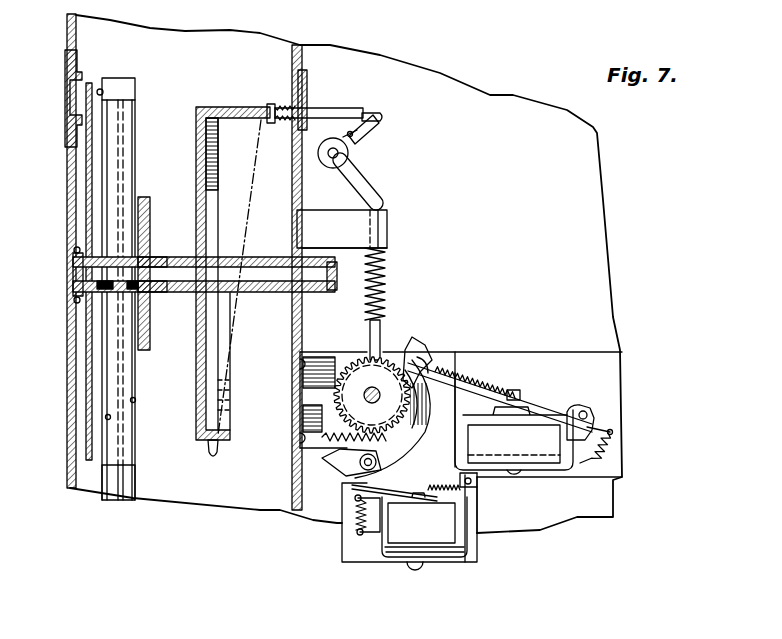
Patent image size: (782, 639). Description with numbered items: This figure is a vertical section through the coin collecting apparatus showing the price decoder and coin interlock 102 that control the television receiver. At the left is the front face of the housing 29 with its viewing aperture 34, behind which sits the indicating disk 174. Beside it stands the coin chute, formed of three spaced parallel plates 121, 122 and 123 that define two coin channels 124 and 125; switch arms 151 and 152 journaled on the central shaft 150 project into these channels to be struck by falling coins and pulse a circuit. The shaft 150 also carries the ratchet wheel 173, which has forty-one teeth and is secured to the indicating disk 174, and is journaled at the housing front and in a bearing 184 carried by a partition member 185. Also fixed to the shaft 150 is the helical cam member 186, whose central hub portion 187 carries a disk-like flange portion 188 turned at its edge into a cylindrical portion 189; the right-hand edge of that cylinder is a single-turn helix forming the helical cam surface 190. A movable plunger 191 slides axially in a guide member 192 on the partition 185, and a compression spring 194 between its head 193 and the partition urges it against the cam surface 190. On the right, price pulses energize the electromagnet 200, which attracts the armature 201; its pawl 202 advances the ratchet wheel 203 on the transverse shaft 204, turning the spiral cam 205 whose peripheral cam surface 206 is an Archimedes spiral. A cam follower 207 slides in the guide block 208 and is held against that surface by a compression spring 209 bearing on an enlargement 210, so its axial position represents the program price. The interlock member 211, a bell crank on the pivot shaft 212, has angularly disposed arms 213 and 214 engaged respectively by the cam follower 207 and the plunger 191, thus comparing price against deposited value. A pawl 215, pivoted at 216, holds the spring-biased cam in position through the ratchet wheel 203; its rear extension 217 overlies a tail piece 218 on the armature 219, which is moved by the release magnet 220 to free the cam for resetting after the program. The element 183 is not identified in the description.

The housing 29 is at (66, 218).
The viewing aperture 34 is at (70, 82).
The coin interlock 102 is at (391, 152).
The plate 121 is at (139, 432).
The plate 122 is at (125, 454).
The plate 123 is at (100, 440).
The coin channel 124 is at (130, 418).
The coin channel 125 is at (106, 418).
The central shaft 150 is at (183, 278).
The switch arm 151 is at (123, 296).
The switch arm 152 is at (74, 303).
The ratchet wheel 173 is at (151, 236).
The indicating disk 174 is at (85, 380).
The bearing 183 is at (72, 285).
The bearing 184 is at (320, 291).
The partition member 185 is at (292, 343).
The helical cam member 186 is at (223, 256).
The central hub portion 187 is at (226, 249).
The disk-like flange portion 188 is at (196, 161).
The cylindrical portion 189 is at (238, 97).
The helical cam surface 190 is at (218, 190).
The movable plunger 191 is at (343, 108).
The guide member 192 is at (306, 104).
The head 193 is at (269, 103).
The compression spring 194 is at (277, 121).
The electromagnet 200 is at (537, 453).
The armature 201 is at (533, 410).
The pawl 202 is at (412, 343).
The ratchet wheel 203 is at (433, 378).
The transverse shaft 204 is at (365, 398).
The spiral cam 205 is at (418, 343).
The peripheral cam surface 206 is at (408, 440).
The cam follower 207 is at (384, 290).
The guide block 208 is at (388, 234).
The compression spring 209 is at (384, 262).
The enlargement 210 is at (383, 321).
The interlock member 211 is at (375, 134).
The pivot shaft 212 is at (327, 163).
The arm 213 is at (367, 167).
The arm 214 is at (380, 120).
The pawl 215 is at (390, 462).
The pivot 216 is at (380, 489).
The rear extension 217 is at (323, 461).
The tail piece 218 is at (357, 501).
The armature 219 is at (433, 504).
The release magnet 220 is at (380, 554).